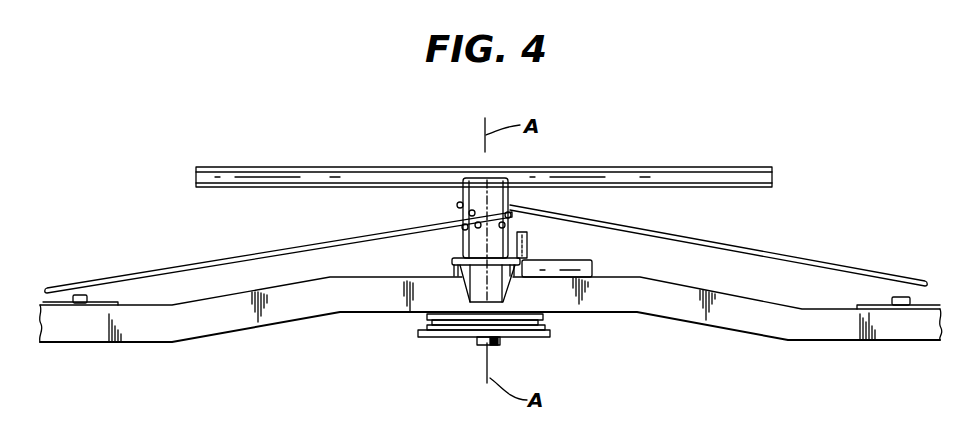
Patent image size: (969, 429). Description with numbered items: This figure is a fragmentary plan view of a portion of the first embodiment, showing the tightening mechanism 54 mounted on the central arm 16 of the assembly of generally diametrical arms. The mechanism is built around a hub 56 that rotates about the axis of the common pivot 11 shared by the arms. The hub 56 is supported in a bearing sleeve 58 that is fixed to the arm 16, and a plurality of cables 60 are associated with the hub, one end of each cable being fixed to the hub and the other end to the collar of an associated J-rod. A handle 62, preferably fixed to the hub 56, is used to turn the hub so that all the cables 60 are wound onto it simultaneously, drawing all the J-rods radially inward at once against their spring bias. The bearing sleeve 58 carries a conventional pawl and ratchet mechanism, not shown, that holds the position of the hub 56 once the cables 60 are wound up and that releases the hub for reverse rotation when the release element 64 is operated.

The common pivot 11 is at (482, 347).
The central arm 16 is at (295, 302).
The tightening mechanism 54 is at (446, 206).
The hub 56 is at (475, 237).
The bearing sleeve 58 is at (497, 287).
The cables 60 is at (256, 252).
The handle 62 is at (602, 176).
The release element 64 is at (530, 241).